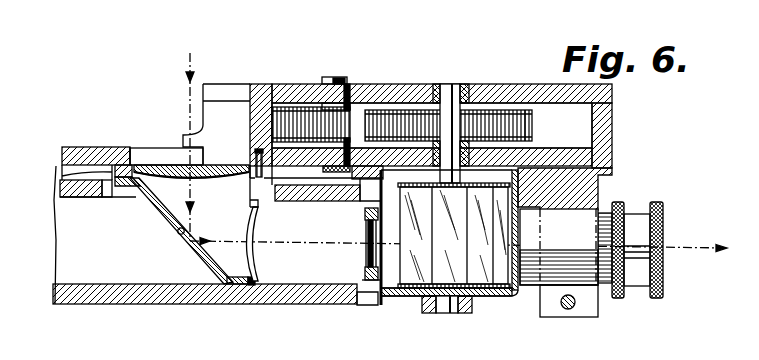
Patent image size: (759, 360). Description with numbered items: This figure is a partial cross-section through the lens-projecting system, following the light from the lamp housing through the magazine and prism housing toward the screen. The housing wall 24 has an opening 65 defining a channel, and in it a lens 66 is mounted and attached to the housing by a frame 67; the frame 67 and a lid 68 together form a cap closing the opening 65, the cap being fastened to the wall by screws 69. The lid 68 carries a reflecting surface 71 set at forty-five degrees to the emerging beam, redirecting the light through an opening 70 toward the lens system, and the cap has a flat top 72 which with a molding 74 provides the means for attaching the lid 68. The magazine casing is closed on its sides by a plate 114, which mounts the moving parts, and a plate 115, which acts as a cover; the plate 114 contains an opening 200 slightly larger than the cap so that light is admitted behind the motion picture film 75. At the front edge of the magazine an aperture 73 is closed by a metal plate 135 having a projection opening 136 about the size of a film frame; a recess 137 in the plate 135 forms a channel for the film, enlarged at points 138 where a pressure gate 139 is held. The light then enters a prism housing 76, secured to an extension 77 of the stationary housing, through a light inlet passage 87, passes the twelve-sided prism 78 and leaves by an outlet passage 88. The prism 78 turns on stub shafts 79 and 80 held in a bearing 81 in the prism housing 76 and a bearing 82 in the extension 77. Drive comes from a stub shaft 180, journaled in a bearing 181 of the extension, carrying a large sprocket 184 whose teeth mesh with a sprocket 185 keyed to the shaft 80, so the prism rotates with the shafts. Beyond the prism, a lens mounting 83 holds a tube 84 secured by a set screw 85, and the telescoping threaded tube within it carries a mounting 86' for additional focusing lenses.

The housing wall 24 is at (82, 147).
The opening 200 is at (62, 175).
The plate 114 is at (80, 198).
The plate 115 is at (113, 300).
The frame 67 is at (124, 148).
The opening 65 is at (148, 165).
The lens 66 is at (162, 148).
The lid 68 is at (171, 229).
The reflecting surface 71 is at (178, 237).
The flat top 72 is at (233, 290).
The molding 74 is at (137, 190).
The screws 69 is at (258, 178).
The opening 70 is at (250, 228).
The aperture 73 is at (372, 304).
The pressure gate 139 is at (366, 211).
The metal plate 135 is at (366, 222).
The projection opening 136 is at (368, 246).
The motion picture film 75 is at (368, 253).
The recess 137 is at (366, 268).
The enlargement points 138 is at (364, 280).
The extension 77 is at (500, 86).
The large sprocket 184 is at (290, 112).
The sprocket 185 is at (533, 125).
The stub shaft 180 is at (335, 78).
The bearing 181 is at (352, 86).
The bearing 82 is at (436, 86).
The stub shaft 80 is at (453, 86).
The prism housing 76 is at (508, 297).
The light inlet passage 87 is at (382, 242).
The prism 78 is at (442, 263).
The stub shaft 79 is at (445, 314).
The bearing 81 is at (466, 314).
The lens mounting 83 is at (590, 192).
The tube 84 is at (601, 210).
The outlet passage 88 is at (522, 239).
The mounting 86' is at (664, 240).
The set screw 85 is at (575, 304).